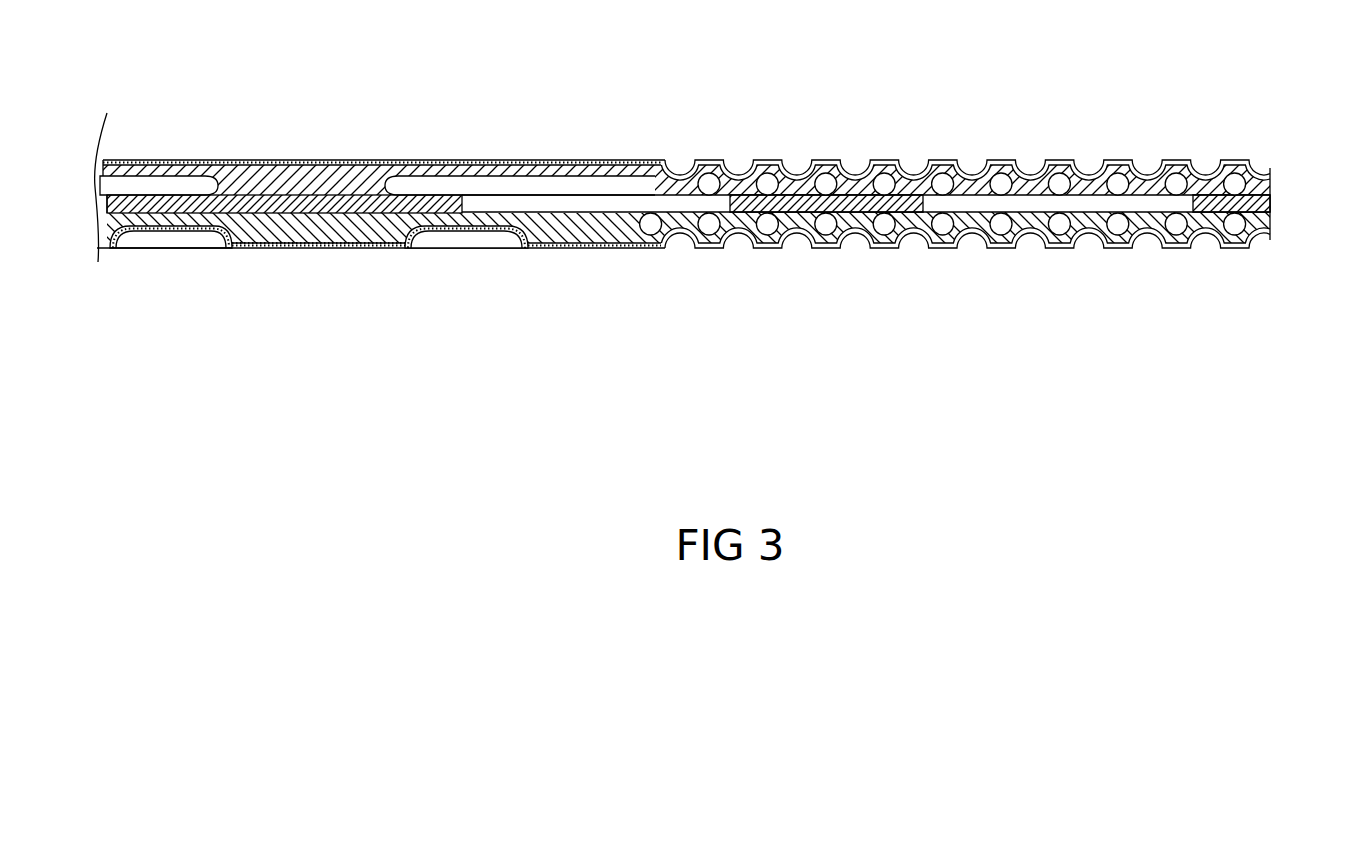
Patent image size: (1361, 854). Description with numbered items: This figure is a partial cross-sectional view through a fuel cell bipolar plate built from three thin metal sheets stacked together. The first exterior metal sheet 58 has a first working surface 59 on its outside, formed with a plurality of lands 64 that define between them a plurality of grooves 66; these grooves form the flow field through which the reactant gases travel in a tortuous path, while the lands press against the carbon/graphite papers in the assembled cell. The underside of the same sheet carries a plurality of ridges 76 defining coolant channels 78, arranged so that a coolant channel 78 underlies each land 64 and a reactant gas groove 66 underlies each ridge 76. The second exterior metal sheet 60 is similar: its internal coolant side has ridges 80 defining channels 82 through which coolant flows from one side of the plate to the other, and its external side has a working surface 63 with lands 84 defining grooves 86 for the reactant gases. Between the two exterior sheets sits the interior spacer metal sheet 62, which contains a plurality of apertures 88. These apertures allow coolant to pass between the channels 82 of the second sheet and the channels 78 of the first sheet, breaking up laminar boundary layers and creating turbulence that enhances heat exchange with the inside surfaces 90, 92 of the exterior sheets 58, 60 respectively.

The first exterior metal sheet 58 is at (161, 160).
The first working surface 59 is at (618, 160).
The second exterior metal sheet 60 is at (305, 250).
The interior spacer metal sheet 62 is at (1270, 205).
The working surface 63 is at (565, 267).
The lands 64 is at (709, 173).
The grooves 66 is at (738, 160).
The ridges 76 is at (670, 195).
The channels 78 is at (825, 173).
The ridges 80 is at (690, 210).
The channels 82 is at (758, 235).
The lands 84 is at (825, 248).
The grooves 86 is at (913, 238).
The apertures 88 is at (990, 205).
The inside surface 90 is at (505, 183).
The inside surface 92 is at (597, 224).